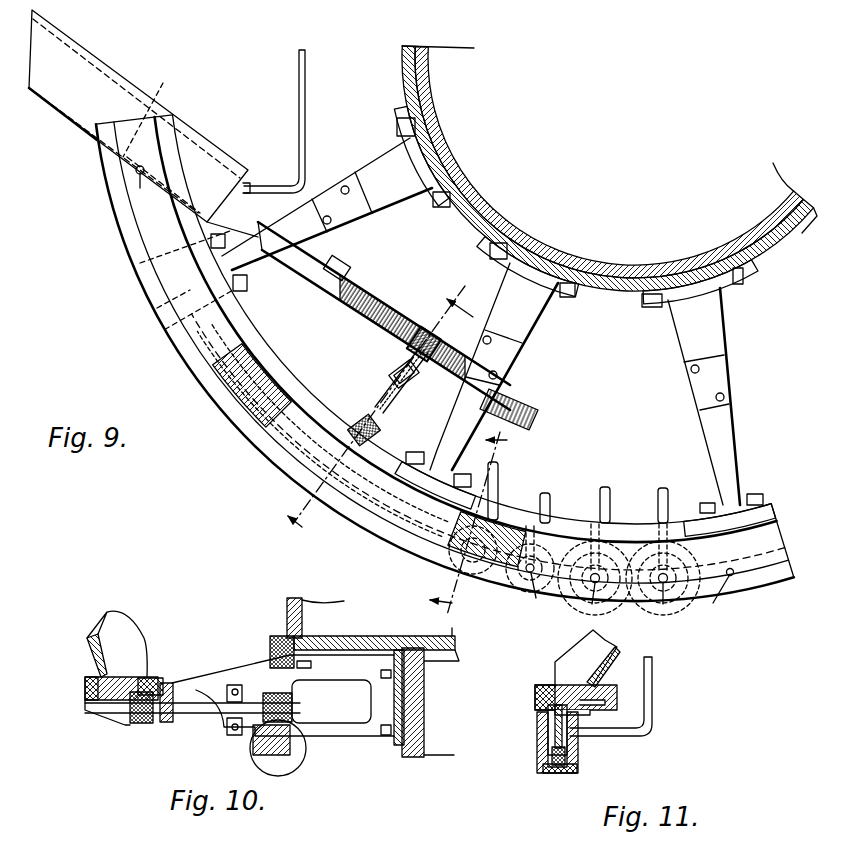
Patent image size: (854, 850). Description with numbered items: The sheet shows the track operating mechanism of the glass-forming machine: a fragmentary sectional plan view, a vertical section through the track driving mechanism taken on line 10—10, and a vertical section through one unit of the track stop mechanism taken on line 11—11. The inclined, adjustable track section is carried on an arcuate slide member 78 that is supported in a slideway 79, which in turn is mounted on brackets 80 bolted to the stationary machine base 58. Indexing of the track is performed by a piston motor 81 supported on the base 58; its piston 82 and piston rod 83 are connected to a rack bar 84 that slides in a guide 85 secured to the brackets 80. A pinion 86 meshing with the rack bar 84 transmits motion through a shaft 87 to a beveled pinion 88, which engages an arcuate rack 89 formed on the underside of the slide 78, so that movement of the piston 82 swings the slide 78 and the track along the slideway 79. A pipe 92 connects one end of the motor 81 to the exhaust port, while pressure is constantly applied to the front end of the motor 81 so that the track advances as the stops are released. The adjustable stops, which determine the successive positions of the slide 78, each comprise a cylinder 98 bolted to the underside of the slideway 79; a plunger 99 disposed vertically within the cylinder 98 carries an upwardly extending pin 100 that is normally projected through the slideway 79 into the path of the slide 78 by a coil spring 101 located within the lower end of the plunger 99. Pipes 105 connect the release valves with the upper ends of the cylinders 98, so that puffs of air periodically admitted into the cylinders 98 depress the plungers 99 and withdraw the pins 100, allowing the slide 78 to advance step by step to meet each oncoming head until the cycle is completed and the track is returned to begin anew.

In FIG. 9, the section line 10- 10 is at (378, 413).
In FIG. 9, the section line 11- 11 is at (480, 524).
In FIG. 9, the machine base 58 is at (461, 151).
In FIG. 10, the machine base 58 is at (302, 625).
In FIG. 9, the arcuate slide member 78 is at (283, 451).
In FIG. 10, the arcuate slide member 78 is at (120, 678).
In FIG. 11, the arcuate slide member 78 is at (570, 687).
In FIG. 9, the slideway 79 is at (418, 505).
In FIG. 10, the slideway 79 is at (87, 696).
In FIG. 11, the slideway 79 is at (540, 695).
In FIG. 9, the brackets 80 is at (404, 197).
In FIG. 10, the brackets 80 is at (243, 668).
In FIG. 9, the piston motor 81 is at (108, 70).
In FIG. 10, the piston motor 81 is at (298, 762).
In FIG. 9, the piston 82 is at (152, 134).
In FIG. 9, the piston rod 83 is at (232, 254).
In FIG. 9, the rack bar 84 is at (522, 400).
In FIG. 10, the rack bar 84 is at (298, 748).
In FIG. 9, the guide 85 is at (343, 276).
In FIG. 10, the guide 85 is at (257, 750).
In FIG. 9, the pinion 86 is at (412, 339).
In FIG. 10, the pinion 86 is at (268, 697).
In FIG. 9, the shaft 87 is at (394, 391).
In FIG. 10, the shaft 87 is at (190, 715).
In FIG. 9, the beveled pinion 88 is at (372, 471).
In FIG. 10, the beveled pinion 88 is at (143, 722).
In FIG. 9, the arcuate rack 89 is at (321, 407).
In FIG. 10, the arcuate rack 89 is at (145, 678).
In FIG. 9, the pipe 92 is at (302, 122).
In FIG. 11, the cylinder 98 is at (538, 740).
In FIG. 11, the plunger 99 is at (568, 747).
In FIG. 9, the pin 100 is at (593, 576).
In FIG. 11, the pin 100 is at (558, 723).
In FIG. 11, the coil spring 101 is at (549, 772).
In FIG. 9, the pipes 105 is at (660, 492).
In FIG. 11, the pipes 105 is at (652, 714).